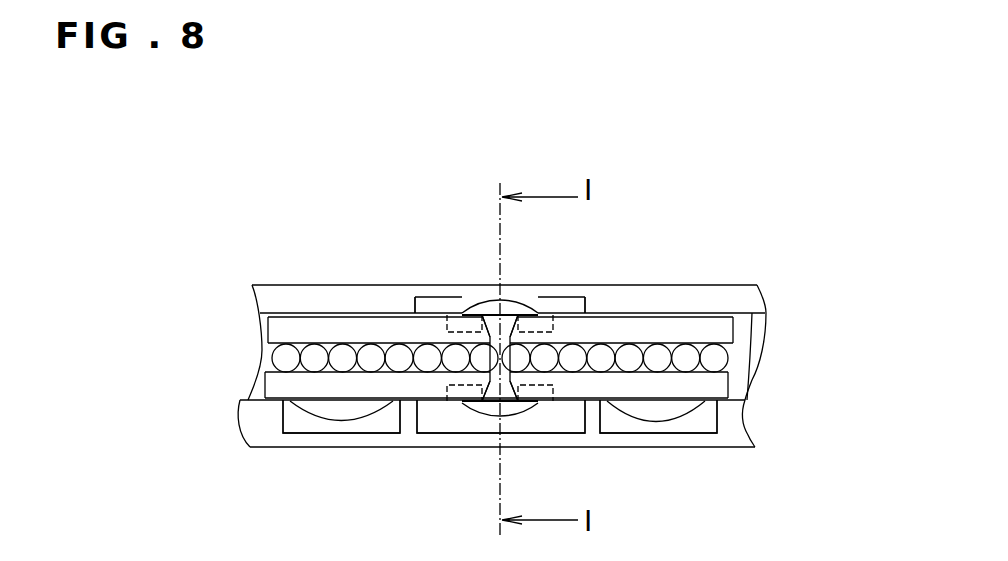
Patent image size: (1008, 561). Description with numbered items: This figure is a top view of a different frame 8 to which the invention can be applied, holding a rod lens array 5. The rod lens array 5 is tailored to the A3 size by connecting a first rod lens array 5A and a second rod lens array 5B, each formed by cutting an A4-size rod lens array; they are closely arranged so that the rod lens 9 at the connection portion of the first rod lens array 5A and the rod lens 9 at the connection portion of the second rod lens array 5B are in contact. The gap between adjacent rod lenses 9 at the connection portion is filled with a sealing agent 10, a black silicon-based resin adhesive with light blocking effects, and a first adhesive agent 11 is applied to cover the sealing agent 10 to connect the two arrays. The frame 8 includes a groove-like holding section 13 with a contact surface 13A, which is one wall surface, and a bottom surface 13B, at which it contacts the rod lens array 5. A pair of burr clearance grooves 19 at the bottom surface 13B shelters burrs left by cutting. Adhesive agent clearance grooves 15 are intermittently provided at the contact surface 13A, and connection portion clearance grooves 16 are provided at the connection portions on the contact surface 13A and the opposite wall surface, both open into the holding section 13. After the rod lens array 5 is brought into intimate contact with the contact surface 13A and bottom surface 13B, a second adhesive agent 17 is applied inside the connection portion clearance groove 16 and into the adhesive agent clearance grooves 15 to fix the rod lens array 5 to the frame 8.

The rod lens array 5 is at (705, 388).
The first rod lens array 5A is at (292, 330).
The second rod lens array 5B is at (645, 330).
The frame 8 is at (720, 302).
The rod lens 9 is at (287, 368).
The sealing agent 10 is at (508, 308).
The first adhesive agent 11 is at (487, 312).
The holding section 13 is at (763, 302).
The contact surface 13A is at (748, 398).
The bottom surface 13B is at (755, 345).
The adhesive agent clearance groove 15 is at (365, 429).
The connection portion clearance groove 16 is at (570, 300).
The second adhesive agent 17 is at (315, 408).
The burr clearance groove 19 is at (450, 312).